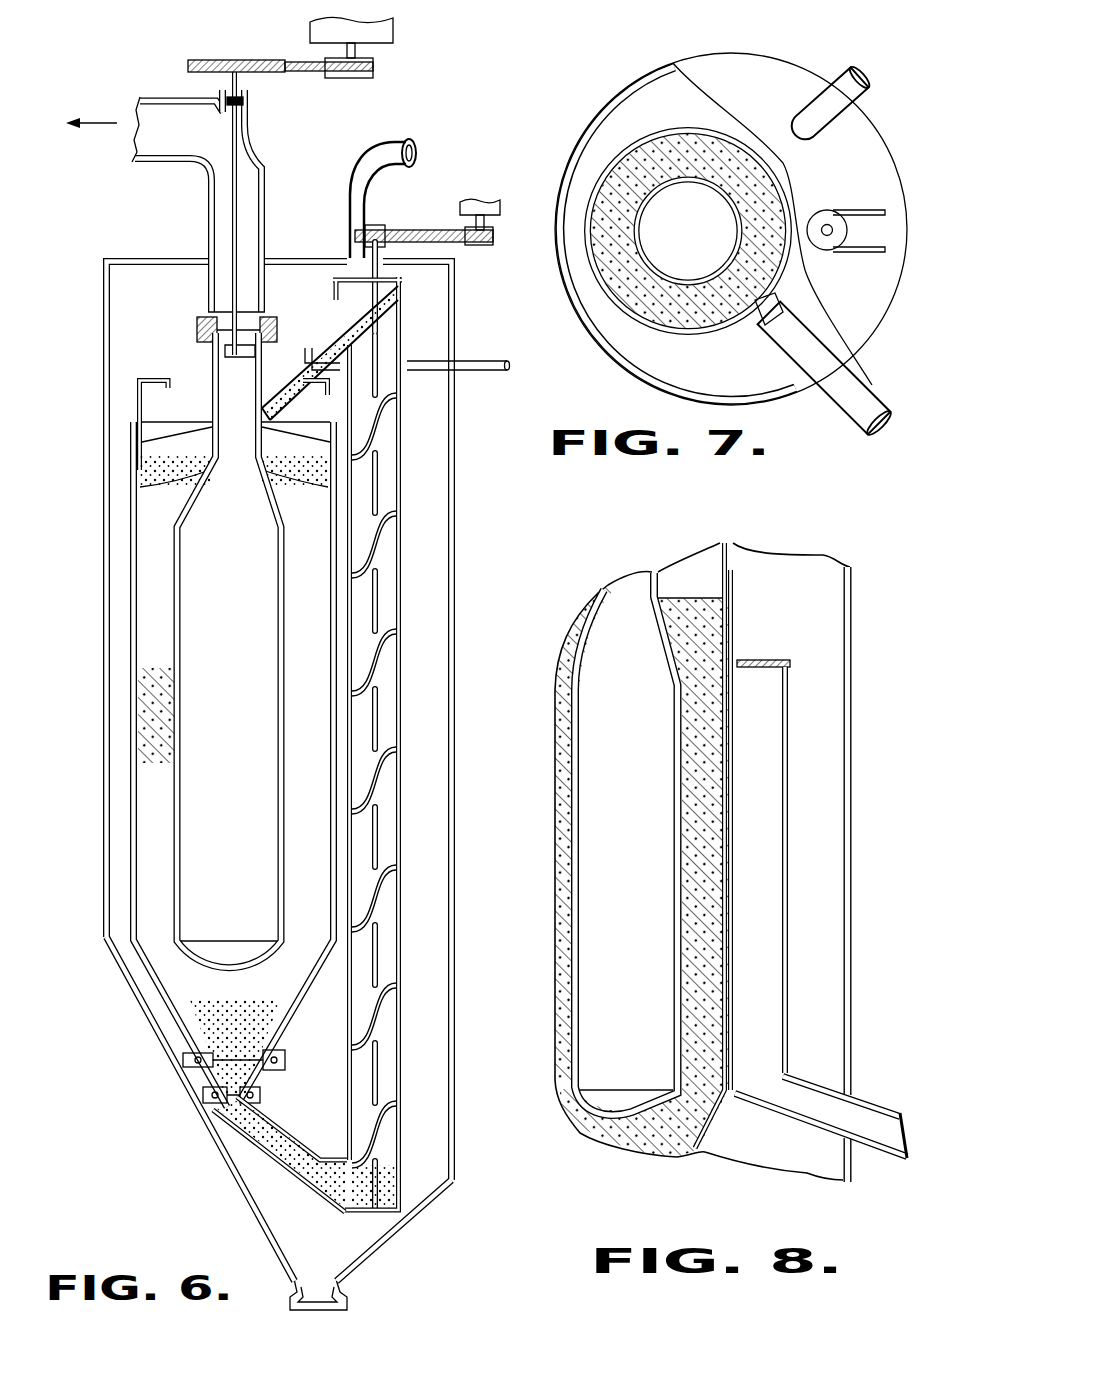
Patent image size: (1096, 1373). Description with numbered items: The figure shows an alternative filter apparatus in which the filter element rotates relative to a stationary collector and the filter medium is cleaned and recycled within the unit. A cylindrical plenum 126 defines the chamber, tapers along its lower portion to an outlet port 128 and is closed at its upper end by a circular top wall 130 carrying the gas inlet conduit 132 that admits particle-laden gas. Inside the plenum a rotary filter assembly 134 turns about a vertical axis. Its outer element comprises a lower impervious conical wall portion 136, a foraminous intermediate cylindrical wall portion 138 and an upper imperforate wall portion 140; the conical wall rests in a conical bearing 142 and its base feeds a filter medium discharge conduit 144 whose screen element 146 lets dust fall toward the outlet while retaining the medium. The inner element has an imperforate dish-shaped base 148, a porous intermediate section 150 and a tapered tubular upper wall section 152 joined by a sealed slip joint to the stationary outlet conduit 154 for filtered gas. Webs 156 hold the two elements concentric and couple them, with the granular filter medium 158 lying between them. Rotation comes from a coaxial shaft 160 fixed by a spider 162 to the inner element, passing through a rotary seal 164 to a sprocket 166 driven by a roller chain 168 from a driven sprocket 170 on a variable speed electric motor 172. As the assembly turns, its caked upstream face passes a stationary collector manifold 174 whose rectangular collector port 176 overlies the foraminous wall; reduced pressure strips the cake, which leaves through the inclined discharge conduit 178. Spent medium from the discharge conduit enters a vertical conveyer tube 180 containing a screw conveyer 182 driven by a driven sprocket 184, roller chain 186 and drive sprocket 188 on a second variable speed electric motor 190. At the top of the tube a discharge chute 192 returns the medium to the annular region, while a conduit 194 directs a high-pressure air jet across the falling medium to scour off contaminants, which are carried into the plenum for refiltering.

In FIG. 6, the cylindrical plenum 126 is at (455, 575).
In FIG. 7, the cylindrical plenum 126 is at (640, 83).
In FIG. 8, the cylindrical plenum 126 is at (852, 785).
In FIG. 6, the outlet port 128 is at (302, 1311).
In FIG. 6, the circular top wall 130 is at (130, 258).
In FIG. 7, the circular top wall 130 is at (866, 131).
In FIG. 6, the gas inlet conduit 132 is at (400, 145).
In FIG. 7, the gas inlet conduit 132 is at (836, 72).
In FIG. 6, the rotary filter assembly 134 is at (126, 704).
In FIG. 7, the rotary filter assembly 134 is at (640, 290).
In FIG. 8, the rotary filter assembly 134 is at (742, 628).
In FIG. 6, the lower impervious conical wall portion 136 is at (165, 1018).
In FIG. 8, the lower impervious conical wall portion 136 is at (697, 1152).
In FIG. 6, the foraminous intermediate cylindrical wall portion 138 is at (130, 810).
In FIG. 7, the foraminous intermediate cylindrical wall portion 138 is at (605, 270).
In FIG. 8, the foraminous intermediate cylindrical wall portion 138 is at (735, 887).
In FIG. 6, the upper cylindrical imperforate wall portion 140 is at (137, 398).
In FIG. 8, the upper cylindrical imperforate wall portion 140 is at (738, 588).
In FIG. 6, the conical bearing 142 is at (200, 1090).
In FIG. 6, the filter medium discharge conduit 144 is at (280, 1127).
In FIG. 6, the screen element 146 is at (250, 1140).
In FIG. 6, the imperforate dish-shaped base 148 is at (224, 962).
In FIG. 8, the imperforate dish-shaped base 148 is at (590, 1118).
In FIG. 6, the cylindrical foraminous intermediate section 150 is at (280, 735).
In FIG. 7, the cylindrical foraminous intermediate section 150 is at (702, 186).
In FIG. 8, the cylindrical foraminous intermediate section 150 is at (565, 942).
In FIG. 6, the imperforate tapered tubular upper wall section 152 is at (199, 508).
In FIG. 7, the imperforate tapered tubular upper wall section 152 is at (688, 231).
In FIG. 8, the imperforate tapered tubular upper wall section 152 is at (662, 638).
In FIG. 6, the stationary outlet conduit 154 is at (205, 280).
In FIG. 6, the baffles or webs 156 is at (150, 440).
In FIG. 7, the baffles or webs 156 is at (645, 124).
In FIG. 6, the granular filter medium 158 is at (140, 485).
In FIG. 6, the coaxial shaft 160 is at (240, 190).
In FIG. 6, the spider 162 is at (230, 362).
In FIG. 6, the rotary seal 164 is at (245, 101).
In FIG. 6, the sprocket 166 is at (205, 60).
In FIG. 6, the roller chain 168 is at (293, 62).
In FIG. 6, the driven sprocket 170 is at (345, 78).
In FIG. 6, the variable speed electric motor 172 is at (310, 28).
In FIG. 7, the collector manifold 174 is at (758, 327).
In FIG. 8, the collector manifold 174 is at (790, 737).
In FIG. 7, the collector port 176 is at (782, 297).
In FIG. 8, the collector port 176 is at (752, 668).
In FIG. 7, the discharge conduit 178 is at (857, 388).
In FIG. 8, the discharge conduit 178 is at (862, 1096).
In FIG. 6, the conveyer tube 180 is at (400, 915).
In FIG. 6, the screw conveyer 182 is at (378, 840).
In FIG. 6, the driven sprocket 184 is at (378, 228).
In FIG. 7, the driven sprocket 184 is at (823, 213).
In FIG. 6, the roller chain 186 is at (447, 244).
In FIG. 7, the roller chain 186 is at (870, 258).
In FIG. 6, the drive sprocket 188 is at (488, 230).
In FIG. 6, the variable speed electric motor 190 is at (490, 200).
In FIG. 6, the discharge chute 192 is at (330, 322).
In FIG. 6, the conduit 194 is at (338, 360).